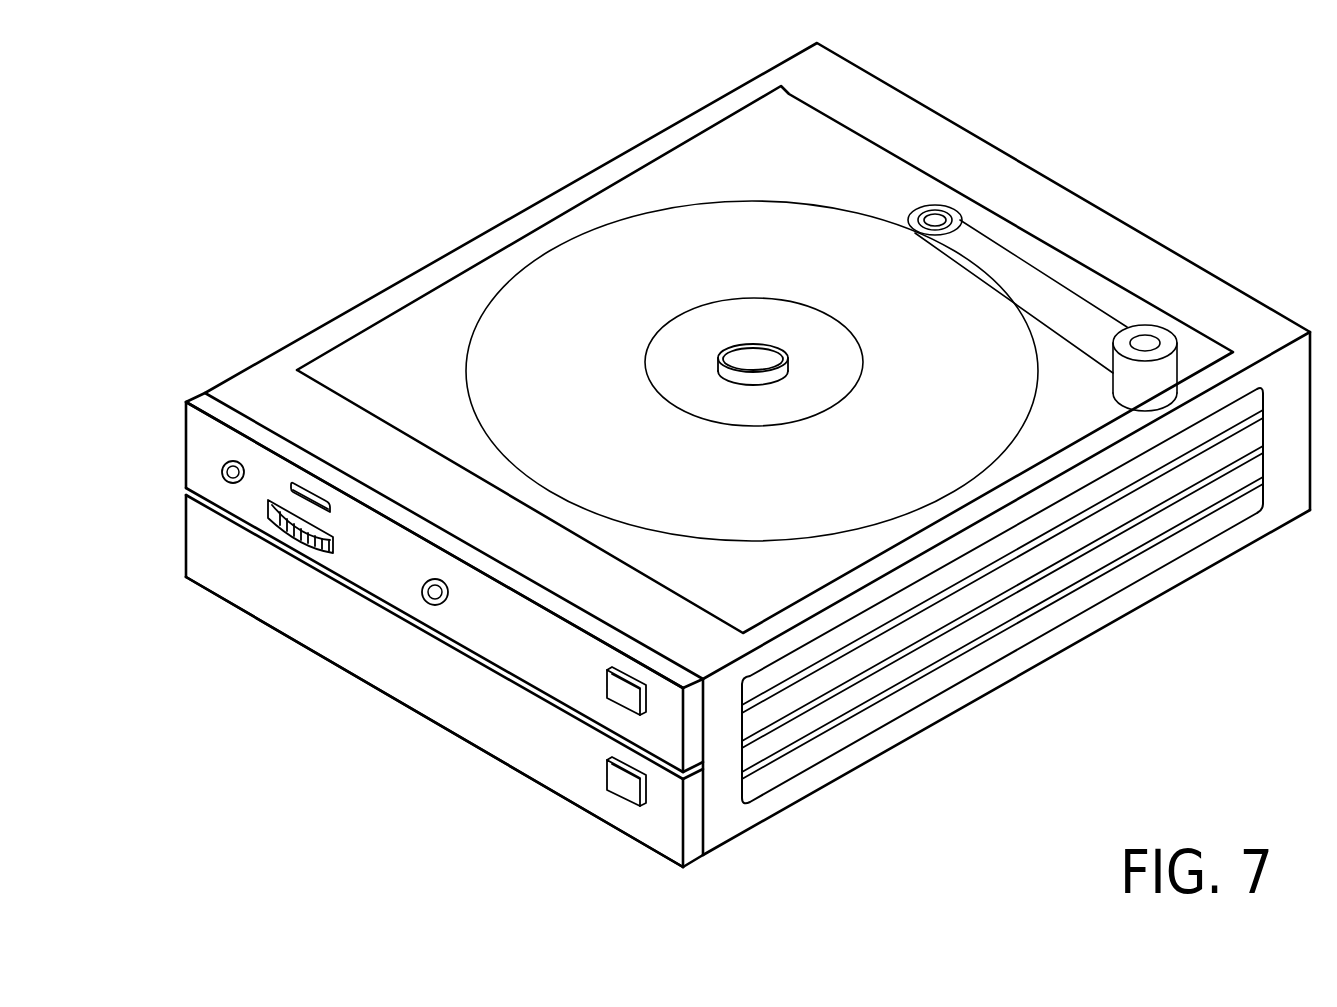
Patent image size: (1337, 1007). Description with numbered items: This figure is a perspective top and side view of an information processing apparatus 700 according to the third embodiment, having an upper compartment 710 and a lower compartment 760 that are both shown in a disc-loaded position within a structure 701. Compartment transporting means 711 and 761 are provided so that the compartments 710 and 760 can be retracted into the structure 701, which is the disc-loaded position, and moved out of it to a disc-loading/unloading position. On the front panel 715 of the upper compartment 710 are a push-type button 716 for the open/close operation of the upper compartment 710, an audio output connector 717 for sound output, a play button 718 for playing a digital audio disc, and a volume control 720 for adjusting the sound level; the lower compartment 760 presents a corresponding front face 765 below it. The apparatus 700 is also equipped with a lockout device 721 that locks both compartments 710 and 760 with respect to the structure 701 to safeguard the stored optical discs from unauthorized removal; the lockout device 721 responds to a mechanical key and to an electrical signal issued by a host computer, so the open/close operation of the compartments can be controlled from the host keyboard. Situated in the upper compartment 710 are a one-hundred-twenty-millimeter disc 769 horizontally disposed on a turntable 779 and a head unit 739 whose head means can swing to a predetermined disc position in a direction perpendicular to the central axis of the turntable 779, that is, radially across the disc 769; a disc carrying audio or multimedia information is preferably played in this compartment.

The information processing apparatus 700 is at (1183, 673).
The structure 701 is at (788, 797).
The upper compartment 710 is at (185, 443).
The compartment transporting means 711 is at (980, 573).
The front panel 715 is at (560, 673).
The push-type button 716 is at (608, 668).
The audio output connector 717 is at (227, 455).
The play button 718 is at (315, 490).
The volume control 720 is at (328, 548).
The lockout device 721 is at (450, 587).
The head unit 739 is at (1072, 360).
The lower compartment 760 is at (185, 533).
The compartment transporting means 761 is at (907, 688).
The lower front panel 765 is at (560, 761).
The 120-mm disc 769 is at (738, 200).
The turntable 779 is at (743, 343).